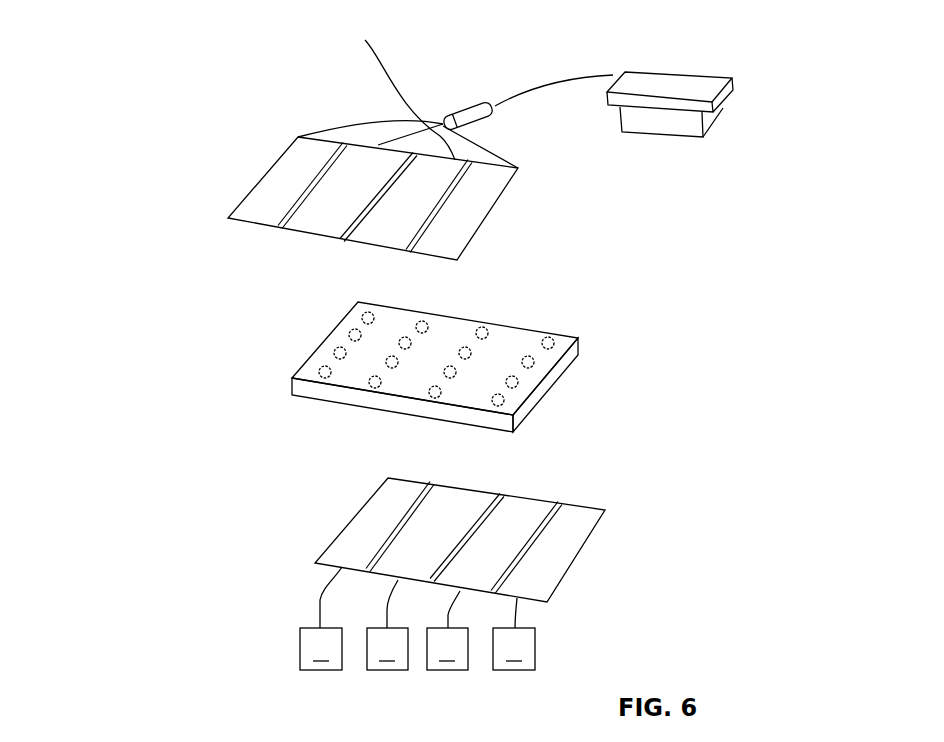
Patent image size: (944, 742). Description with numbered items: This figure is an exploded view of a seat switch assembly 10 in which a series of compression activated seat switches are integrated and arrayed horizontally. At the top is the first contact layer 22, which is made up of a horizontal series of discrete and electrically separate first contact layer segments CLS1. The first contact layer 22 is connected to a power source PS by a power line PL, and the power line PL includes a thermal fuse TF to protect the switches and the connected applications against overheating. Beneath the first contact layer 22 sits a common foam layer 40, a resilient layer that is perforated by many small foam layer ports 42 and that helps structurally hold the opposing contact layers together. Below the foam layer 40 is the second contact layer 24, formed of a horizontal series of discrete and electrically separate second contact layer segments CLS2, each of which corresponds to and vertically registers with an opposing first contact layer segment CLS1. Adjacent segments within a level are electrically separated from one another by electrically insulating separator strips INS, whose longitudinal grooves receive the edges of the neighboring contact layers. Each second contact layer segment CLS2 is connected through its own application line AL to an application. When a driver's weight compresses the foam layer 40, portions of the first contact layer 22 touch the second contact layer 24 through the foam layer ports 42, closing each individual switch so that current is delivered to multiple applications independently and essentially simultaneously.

The seat switch assembly 10 is at (120, 78).
The first contact layer 22 is at (584, 190).
The first contact layer segments CLS1 is at (278, 191).
The power line PL is at (455, 97).
The thermal fuse TF is at (472, 117).
The power source PS is at (670, 132).
The foam layer 40 is at (634, 317).
The foam layer ports 42 is at (349, 330).
The second contact layer 24 is at (635, 501).
The second contact layer segments CLS2 is at (570, 532).
The electrically insulating separator strips INS is at (368, 571).
The application line AL is at (317, 620).